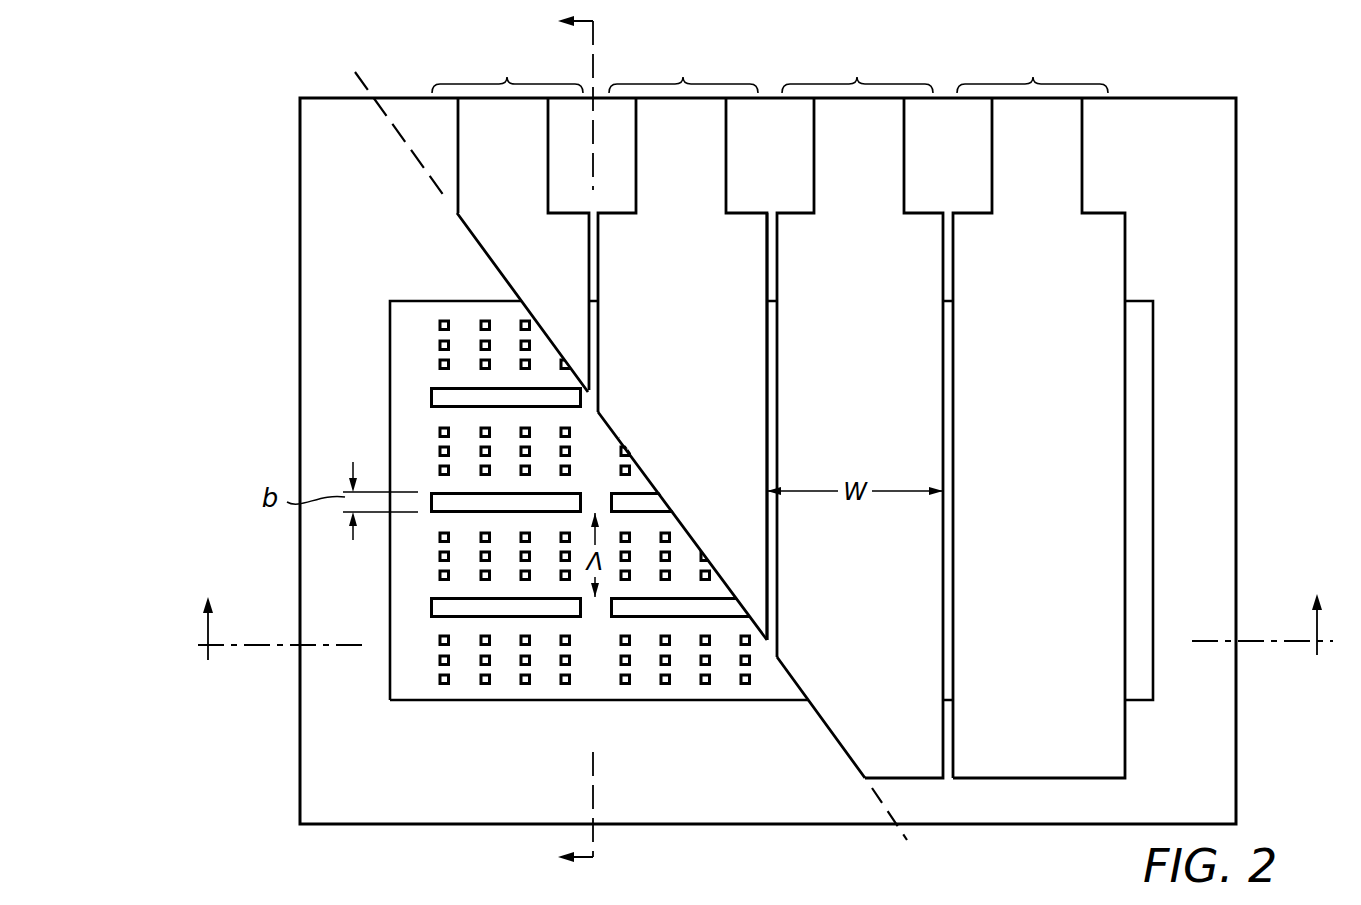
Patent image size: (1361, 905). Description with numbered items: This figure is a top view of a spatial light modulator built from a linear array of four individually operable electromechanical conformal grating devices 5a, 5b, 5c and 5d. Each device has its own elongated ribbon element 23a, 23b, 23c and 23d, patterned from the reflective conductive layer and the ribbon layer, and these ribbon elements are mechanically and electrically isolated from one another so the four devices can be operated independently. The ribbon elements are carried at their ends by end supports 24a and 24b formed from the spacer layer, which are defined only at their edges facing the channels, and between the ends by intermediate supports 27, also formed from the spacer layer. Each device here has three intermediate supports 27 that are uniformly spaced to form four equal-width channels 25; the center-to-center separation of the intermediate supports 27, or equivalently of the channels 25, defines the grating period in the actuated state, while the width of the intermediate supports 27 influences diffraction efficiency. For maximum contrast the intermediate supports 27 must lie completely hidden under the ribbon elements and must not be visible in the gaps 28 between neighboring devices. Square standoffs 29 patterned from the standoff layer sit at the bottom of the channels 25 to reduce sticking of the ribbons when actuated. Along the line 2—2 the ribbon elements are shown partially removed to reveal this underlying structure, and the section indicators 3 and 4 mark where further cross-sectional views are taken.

The line 2— 2 is at (629, 457).
The section line 3- 3 is at (561, 440).
The section line 4- 4 is at (763, 624).
The conformal grating device 5a is at (507, 67).
The conformal grating device 5b is at (683, 67).
The conformal grating device 5c is at (857, 67).
The conformal grating device 5d is at (1032, 67).
The elongated ribbon element 23a is at (525, 172).
The elongated ribbon element 23b is at (710, 172).
The elongated ribbon element 23c is at (884, 172).
The elongated ribbon element 23d is at (1062, 172).
The end support 24a is at (1132, 277).
The end support 24b is at (1137, 717).
The channels 25 is at (404, 337).
The intermediate supports 27 is at (432, 397).
The gaps 28 is at (770, 322).
The square standoffs 29 is at (445, 685).